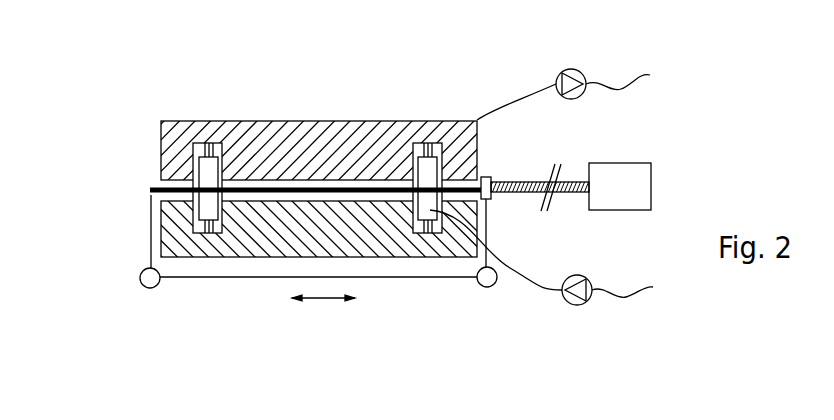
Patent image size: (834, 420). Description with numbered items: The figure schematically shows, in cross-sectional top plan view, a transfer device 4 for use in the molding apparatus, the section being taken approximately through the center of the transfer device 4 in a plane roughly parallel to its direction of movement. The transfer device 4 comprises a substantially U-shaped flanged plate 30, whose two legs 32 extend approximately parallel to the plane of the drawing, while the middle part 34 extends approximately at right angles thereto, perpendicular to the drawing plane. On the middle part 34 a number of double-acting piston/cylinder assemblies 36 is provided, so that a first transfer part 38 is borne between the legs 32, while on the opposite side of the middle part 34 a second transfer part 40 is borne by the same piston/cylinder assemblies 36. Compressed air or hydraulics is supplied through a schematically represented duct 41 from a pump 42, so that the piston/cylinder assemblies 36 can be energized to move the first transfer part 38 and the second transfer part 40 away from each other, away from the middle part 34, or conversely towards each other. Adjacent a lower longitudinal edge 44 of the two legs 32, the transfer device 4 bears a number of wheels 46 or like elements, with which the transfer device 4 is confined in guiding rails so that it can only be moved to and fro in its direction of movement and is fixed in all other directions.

The transfer device 4 is at (364, 104).
The U-shaped flanged plate 30 is at (151, 214).
The legs 32 is at (198, 268).
The middle part 34 is at (150, 188).
The double-acting piston/cylinder assemblies 36 is at (213, 143).
The first transfer part 38 is at (256, 222).
The second transfer part 40 is at (276, 138).
The duct 41 is at (537, 288).
The pump 42 is at (588, 302).
The lower longitudinal edge 44 is at (417, 278).
The wheels 46 is at (141, 291).